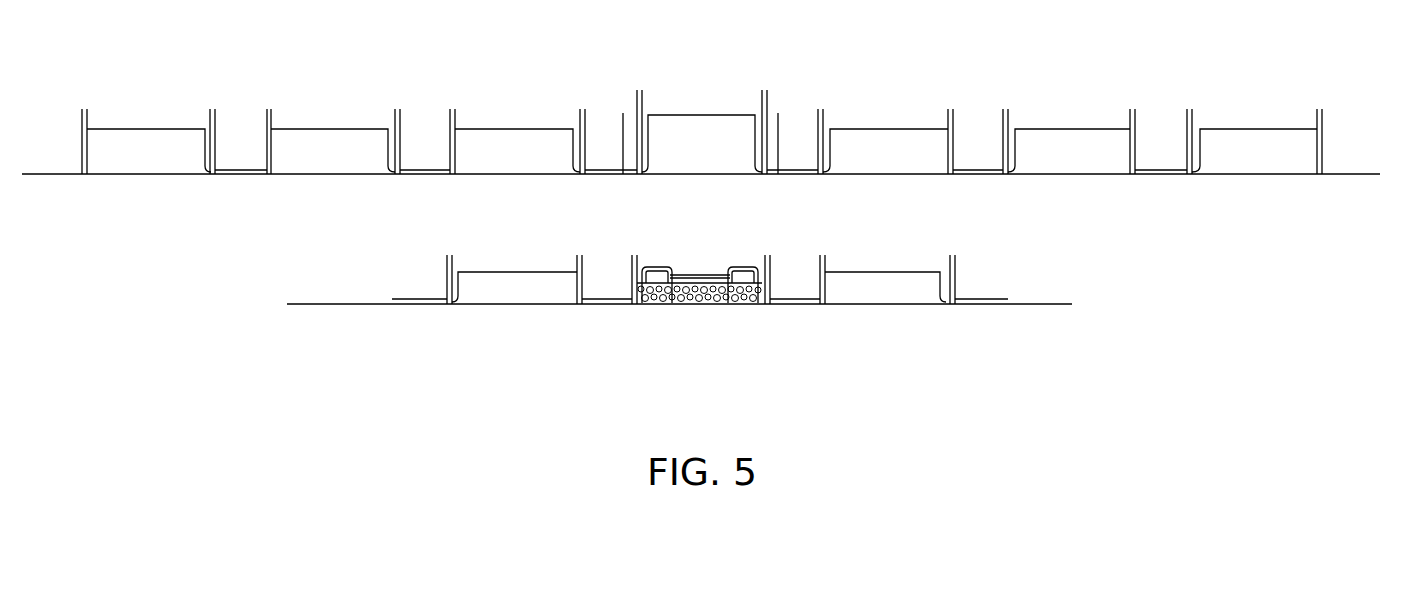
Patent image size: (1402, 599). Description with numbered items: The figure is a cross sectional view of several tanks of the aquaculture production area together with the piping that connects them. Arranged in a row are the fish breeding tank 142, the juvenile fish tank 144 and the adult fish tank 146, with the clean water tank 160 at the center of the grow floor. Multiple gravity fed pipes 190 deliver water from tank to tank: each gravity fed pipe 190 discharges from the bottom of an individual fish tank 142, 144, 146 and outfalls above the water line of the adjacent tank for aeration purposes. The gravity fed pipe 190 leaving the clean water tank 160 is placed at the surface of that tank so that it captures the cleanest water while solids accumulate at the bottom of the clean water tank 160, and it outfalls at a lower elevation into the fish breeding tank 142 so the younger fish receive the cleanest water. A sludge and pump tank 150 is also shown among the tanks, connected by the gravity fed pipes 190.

The adult fish tank 146 is at (105, 129).
The juvenile fish tank 144 is at (290, 129).
The fish breeding tank 142 is at (473, 129).
The clean water tank 160 is at (748, 113).
The gravity fed pipe 190 is at (238, 173).
The sludge and pump tank 150 is at (695, 300).